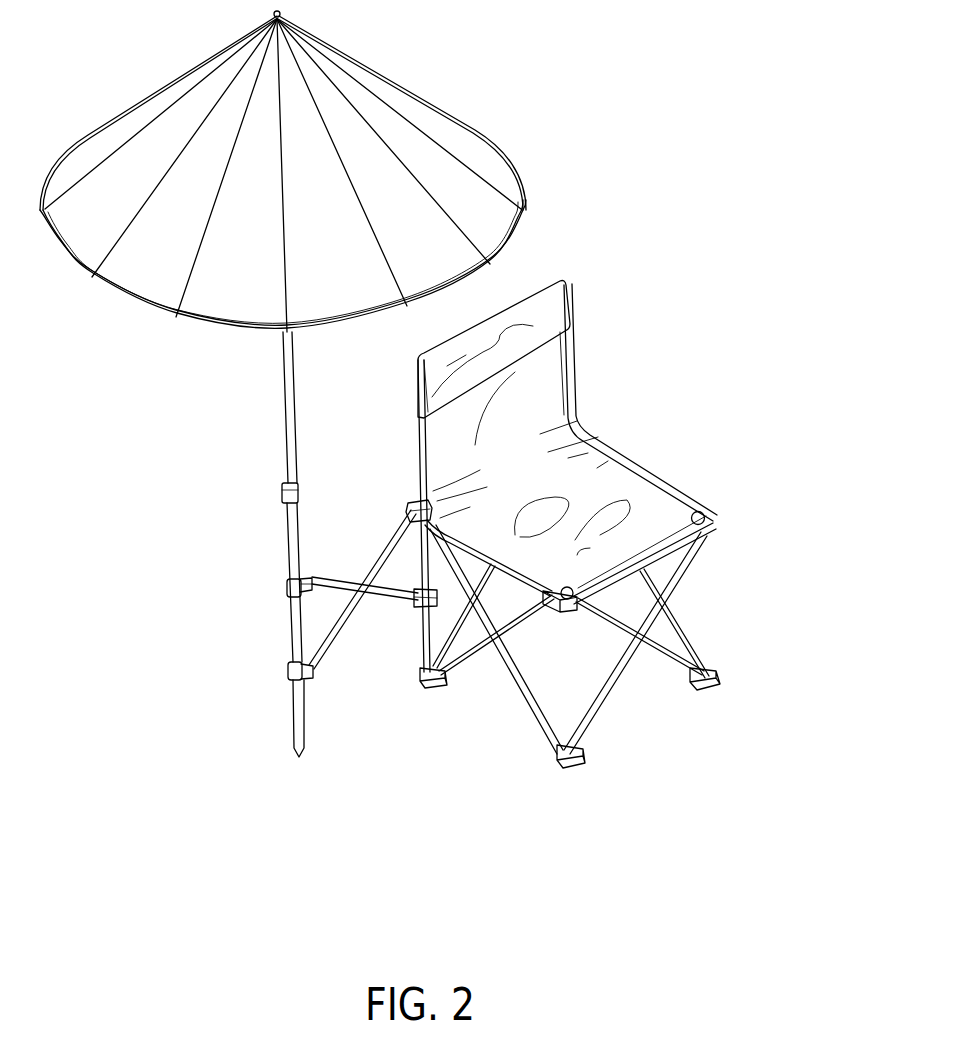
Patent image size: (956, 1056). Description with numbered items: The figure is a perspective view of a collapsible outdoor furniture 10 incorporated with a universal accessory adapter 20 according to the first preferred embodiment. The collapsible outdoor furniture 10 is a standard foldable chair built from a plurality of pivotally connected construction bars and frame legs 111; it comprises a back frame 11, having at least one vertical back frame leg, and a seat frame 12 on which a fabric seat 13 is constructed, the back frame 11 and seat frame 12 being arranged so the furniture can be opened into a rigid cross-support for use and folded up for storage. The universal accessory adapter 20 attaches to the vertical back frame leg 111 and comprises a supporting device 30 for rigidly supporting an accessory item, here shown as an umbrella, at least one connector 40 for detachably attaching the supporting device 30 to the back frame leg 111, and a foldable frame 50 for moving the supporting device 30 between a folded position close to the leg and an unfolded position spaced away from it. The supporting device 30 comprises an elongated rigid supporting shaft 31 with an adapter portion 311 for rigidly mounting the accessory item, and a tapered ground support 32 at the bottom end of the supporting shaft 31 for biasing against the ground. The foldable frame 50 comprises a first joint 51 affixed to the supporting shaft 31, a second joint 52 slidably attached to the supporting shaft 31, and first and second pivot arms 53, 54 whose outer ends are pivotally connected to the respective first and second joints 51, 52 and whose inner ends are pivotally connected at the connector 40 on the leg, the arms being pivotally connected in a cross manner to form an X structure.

The collapsible outdoor furniture 10 is at (617, 494).
The back frame 11 is at (576, 336).
The frame leg 111 is at (423, 642).
The seat frame 12 is at (692, 572).
The fabric seat 13 is at (594, 502).
The universal accessory adapter 20 is at (100, 490).
The supporting device 30 is at (221, 607).
The supporting shaft 31 is at (297, 628).
The adapter portion 311 is at (278, 510).
The ground support 32 is at (302, 758).
The connector 40 is at (414, 506).
The foldable frame 50 is at (260, 606).
The first joint 51 is at (285, 586).
The second joint 52 is at (288, 677).
The first pivot arm 53 is at (330, 582).
The second pivot arm 54 is at (387, 550).